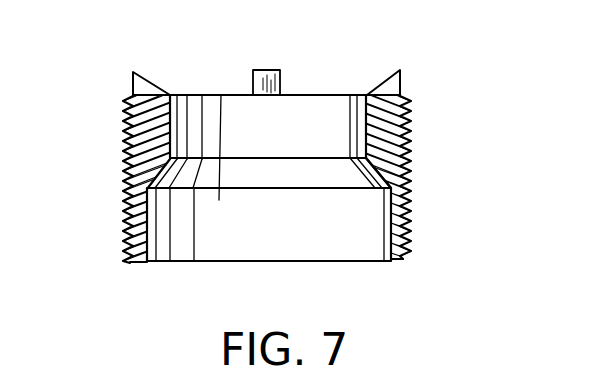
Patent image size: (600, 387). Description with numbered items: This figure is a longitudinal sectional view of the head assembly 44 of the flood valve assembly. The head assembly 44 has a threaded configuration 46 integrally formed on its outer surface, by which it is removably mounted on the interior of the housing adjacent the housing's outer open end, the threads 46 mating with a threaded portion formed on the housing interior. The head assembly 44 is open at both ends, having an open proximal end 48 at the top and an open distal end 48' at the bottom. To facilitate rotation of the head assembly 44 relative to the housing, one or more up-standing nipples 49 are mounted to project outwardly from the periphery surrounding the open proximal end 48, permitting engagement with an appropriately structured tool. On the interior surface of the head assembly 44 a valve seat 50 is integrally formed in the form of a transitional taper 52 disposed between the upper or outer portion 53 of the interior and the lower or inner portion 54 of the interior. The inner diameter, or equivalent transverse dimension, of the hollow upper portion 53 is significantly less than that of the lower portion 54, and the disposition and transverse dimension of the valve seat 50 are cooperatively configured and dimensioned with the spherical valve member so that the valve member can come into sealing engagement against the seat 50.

The head assembly 44 is at (278, 177).
The threaded configuration 46 is at (131, 183).
The open proximal end 48 is at (266, 108).
The open distal end 48' is at (290, 262).
The up-standing nipples 49 is at (141, 82).
The valve seat 50 is at (371, 185).
The transitional taper 52 is at (175, 180).
The upper or outer portion of the interior 53 is at (283, 140).
The lower or inner portion of the interior 54 is at (283, 232).